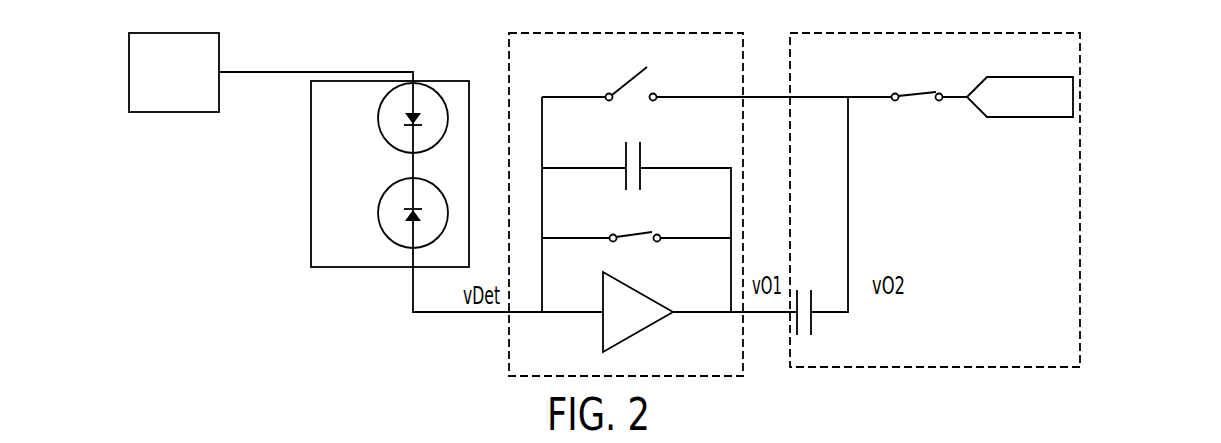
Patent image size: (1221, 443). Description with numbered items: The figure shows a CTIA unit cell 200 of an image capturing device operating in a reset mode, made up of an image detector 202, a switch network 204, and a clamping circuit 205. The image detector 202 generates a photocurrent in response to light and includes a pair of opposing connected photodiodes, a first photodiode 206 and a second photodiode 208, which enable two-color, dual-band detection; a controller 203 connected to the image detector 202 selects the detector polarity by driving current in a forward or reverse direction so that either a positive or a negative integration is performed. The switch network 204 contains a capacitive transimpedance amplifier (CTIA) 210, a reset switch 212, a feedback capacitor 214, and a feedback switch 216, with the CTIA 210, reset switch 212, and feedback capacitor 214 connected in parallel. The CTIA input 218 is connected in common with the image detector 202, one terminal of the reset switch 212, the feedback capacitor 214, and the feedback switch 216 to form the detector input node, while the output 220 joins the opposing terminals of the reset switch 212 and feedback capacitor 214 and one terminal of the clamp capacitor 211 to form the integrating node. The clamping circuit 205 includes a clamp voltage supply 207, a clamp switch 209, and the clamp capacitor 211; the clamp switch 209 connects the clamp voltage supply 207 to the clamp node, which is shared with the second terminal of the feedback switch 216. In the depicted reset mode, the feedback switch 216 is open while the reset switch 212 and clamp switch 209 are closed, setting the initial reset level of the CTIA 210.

The CTIA unit cell 200 is at (1152, 190).
The image detector 202 is at (298, 163).
The controller 203 is at (188, 85).
The switch network 204 is at (494, 59).
The clamping circuit 205 is at (1097, 60).
The first photodiode 206 is at (378, 127).
The clamp voltage supply 207 is at (1018, 118).
The second photodiode 208 is at (378, 222).
The clamp switch 209 is at (893, 94).
The capacitive transimpedance amplifier (CTIA) 210 is at (645, 293).
The clamp capacitor 211 is at (813, 317).
The reset switch 212 is at (611, 236).
The feedback capacitor 214 is at (625, 158).
The feedback switch 216 is at (606, 94).
The input 218 is at (584, 313).
The output 220 is at (684, 314).